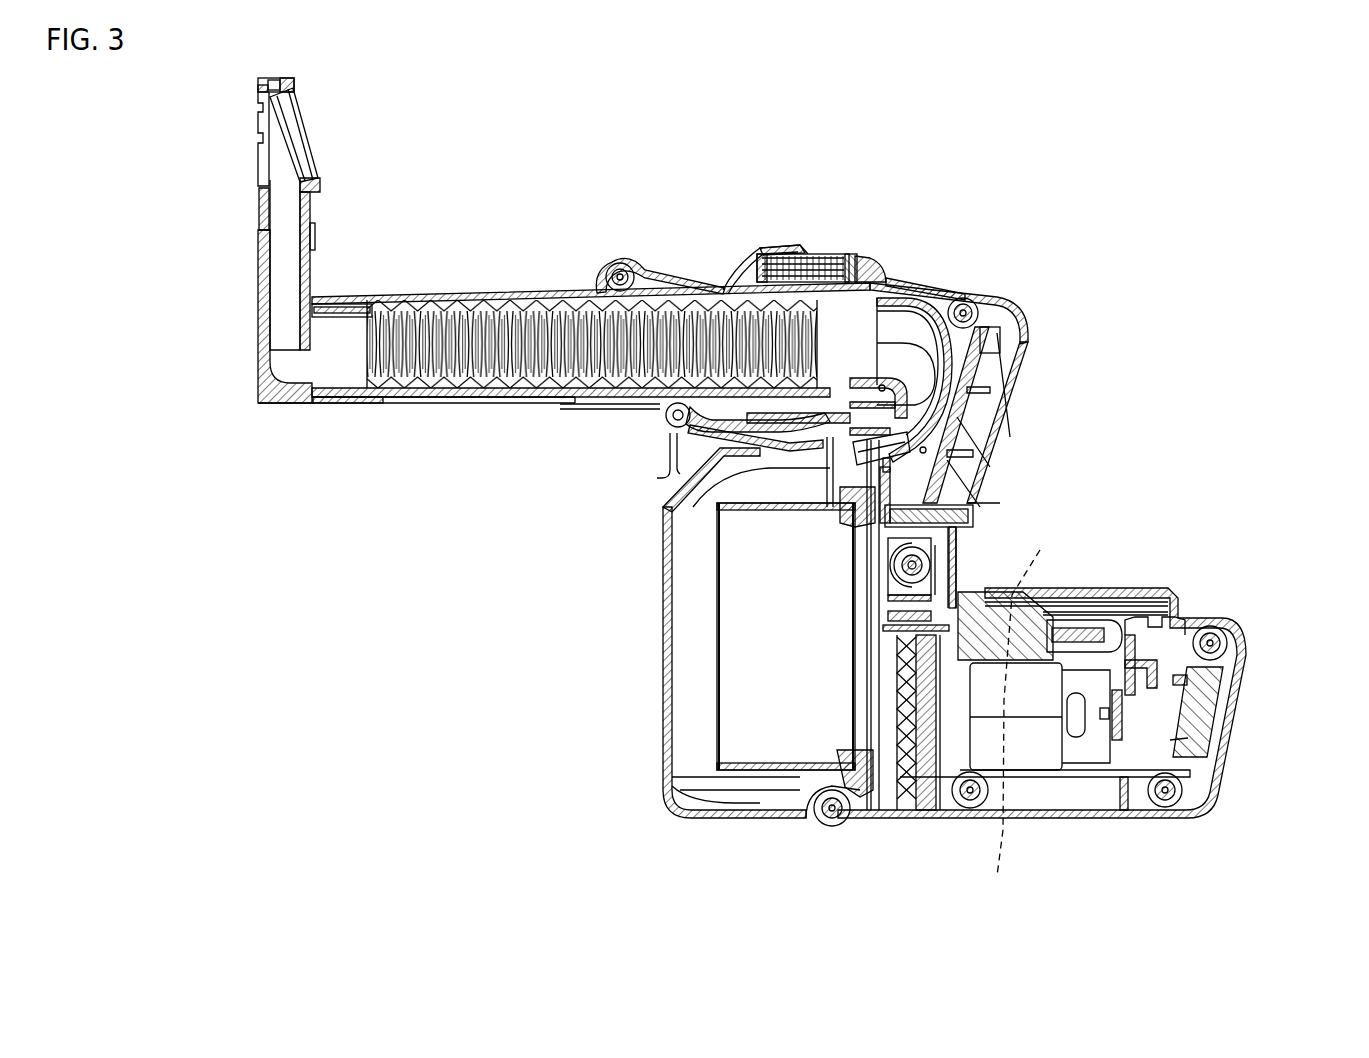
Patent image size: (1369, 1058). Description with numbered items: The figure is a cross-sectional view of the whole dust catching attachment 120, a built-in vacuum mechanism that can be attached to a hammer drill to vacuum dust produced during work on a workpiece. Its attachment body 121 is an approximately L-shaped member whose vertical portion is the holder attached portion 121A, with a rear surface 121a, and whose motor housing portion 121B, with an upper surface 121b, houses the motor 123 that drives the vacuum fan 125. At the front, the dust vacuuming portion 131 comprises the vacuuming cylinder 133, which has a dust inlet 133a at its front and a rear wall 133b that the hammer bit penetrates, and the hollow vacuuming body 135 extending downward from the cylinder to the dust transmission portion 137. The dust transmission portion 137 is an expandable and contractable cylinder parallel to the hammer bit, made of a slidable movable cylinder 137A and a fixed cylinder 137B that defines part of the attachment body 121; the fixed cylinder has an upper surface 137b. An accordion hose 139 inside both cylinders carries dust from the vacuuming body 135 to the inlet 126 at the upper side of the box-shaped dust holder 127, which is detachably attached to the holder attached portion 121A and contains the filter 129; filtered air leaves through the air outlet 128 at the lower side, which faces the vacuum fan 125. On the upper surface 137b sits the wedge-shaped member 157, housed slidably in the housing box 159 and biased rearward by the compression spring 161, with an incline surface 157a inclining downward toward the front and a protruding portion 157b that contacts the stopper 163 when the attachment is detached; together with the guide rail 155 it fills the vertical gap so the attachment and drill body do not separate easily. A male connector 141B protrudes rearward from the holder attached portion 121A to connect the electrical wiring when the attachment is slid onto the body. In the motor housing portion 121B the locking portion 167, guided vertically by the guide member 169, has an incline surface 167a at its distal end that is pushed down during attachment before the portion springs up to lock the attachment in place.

The dust catching attachment 120 is at (990, 253).
The attachment body 121 is at (1024, 313).
The holder attached portion 121A is at (1003, 425).
The motor housing portion 121B is at (1239, 700).
The rear surface of the holder attached portion 121a is at (880, 572).
The upper surface of the motor housing portion 121b is at (1083, 613).
The motor 123 is at (1048, 747).
The vacuum fan 125 is at (918, 812).
The inlet 126 is at (830, 462).
The dust holder 127 is at (663, 647).
The air outlet 128 is at (880, 710).
The filter 129 is at (735, 693).
The dust vacuuming portion 131 is at (318, 205).
The vacuuming cylinder 133 is at (264, 78).
The dust inlet 133a is at (258, 160).
The rear wall 133b is at (304, 118).
The vacuuming body 135 is at (258, 268).
The dust transmission portion 137 is at (553, 294).
The movable cylinder 137A is at (465, 296).
The fixed cylinder 137B is at (613, 412).
The upper surface of the fixed cylinder 137b is at (908, 286).
The accordion hose 139 is at (455, 398).
The male connector 141B is at (975, 520).
The guide rail 155 is at (1130, 612).
The wedge-shaped member 157 is at (830, 256).
The incline surface 157a is at (866, 256).
The protruding portion 157b is at (803, 252).
The housing box 159 is at (770, 250).
The compression spring 161 is at (738, 266).
The stopper 163 is at (853, 254).
The locking portion 167 is at (1016, 784).
The incline surface 167a is at (1037, 701).
The guide member 169 is at (1022, 612).